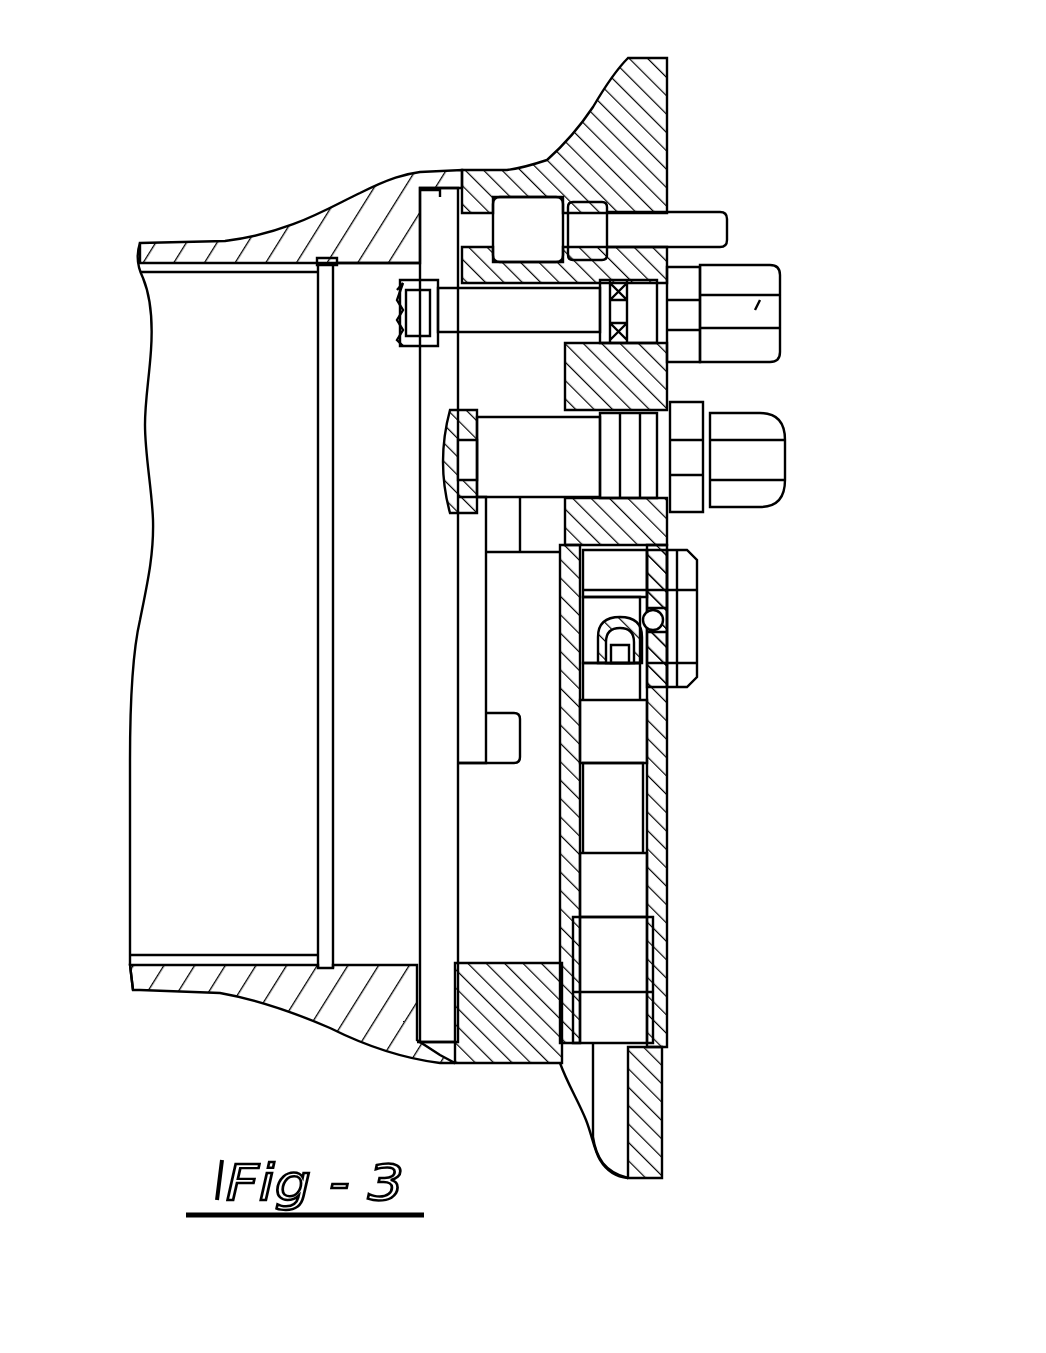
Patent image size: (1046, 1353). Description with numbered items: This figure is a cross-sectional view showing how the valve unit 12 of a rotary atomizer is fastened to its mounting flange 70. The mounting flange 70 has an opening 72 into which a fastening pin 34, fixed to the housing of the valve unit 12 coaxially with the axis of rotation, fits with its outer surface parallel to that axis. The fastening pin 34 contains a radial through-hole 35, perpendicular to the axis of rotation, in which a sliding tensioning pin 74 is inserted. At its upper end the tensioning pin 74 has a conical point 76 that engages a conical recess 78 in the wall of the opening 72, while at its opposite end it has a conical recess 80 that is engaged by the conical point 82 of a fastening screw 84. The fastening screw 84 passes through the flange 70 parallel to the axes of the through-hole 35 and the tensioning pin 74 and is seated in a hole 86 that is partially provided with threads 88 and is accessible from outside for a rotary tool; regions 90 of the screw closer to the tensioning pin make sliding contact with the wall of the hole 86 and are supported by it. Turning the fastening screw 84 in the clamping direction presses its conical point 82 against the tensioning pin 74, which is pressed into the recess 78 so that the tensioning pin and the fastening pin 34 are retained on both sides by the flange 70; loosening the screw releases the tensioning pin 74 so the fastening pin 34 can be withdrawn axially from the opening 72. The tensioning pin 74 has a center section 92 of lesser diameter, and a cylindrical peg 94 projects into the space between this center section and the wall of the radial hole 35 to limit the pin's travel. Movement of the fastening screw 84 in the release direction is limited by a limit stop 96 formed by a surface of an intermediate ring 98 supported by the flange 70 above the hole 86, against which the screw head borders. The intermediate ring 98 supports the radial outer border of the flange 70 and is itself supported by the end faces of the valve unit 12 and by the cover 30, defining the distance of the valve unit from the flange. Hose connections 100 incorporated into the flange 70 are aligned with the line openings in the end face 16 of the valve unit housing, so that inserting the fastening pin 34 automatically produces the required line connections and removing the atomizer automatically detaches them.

The valve unit 12 is at (230, 417).
The outer end face 16 is at (463, 367).
The cover 30 is at (320, 990).
The fastening pin 34 is at (690, 553).
The radial through-hole 35 is at (577, 573).
The mounting flange 70 is at (645, 200).
The opening 72 is at (567, 532).
The tensioning pin 74 is at (597, 572).
The conical point 76 is at (622, 547).
The conical recess 78 is at (705, 510).
The conical recess 80 is at (615, 632).
The conical point 82 is at (612, 657).
The fastening screw 84 is at (607, 817).
The hole 86 is at (648, 790).
The threads 88 is at (660, 950).
The regions of the fastening screw 90 is at (610, 732).
The center section 92 is at (610, 612).
The cylindrical peg 94 is at (660, 624).
The limit stop 96 is at (658, 1020).
The intermediate ring 98 is at (612, 140).
The hose connections 100 is at (760, 315).